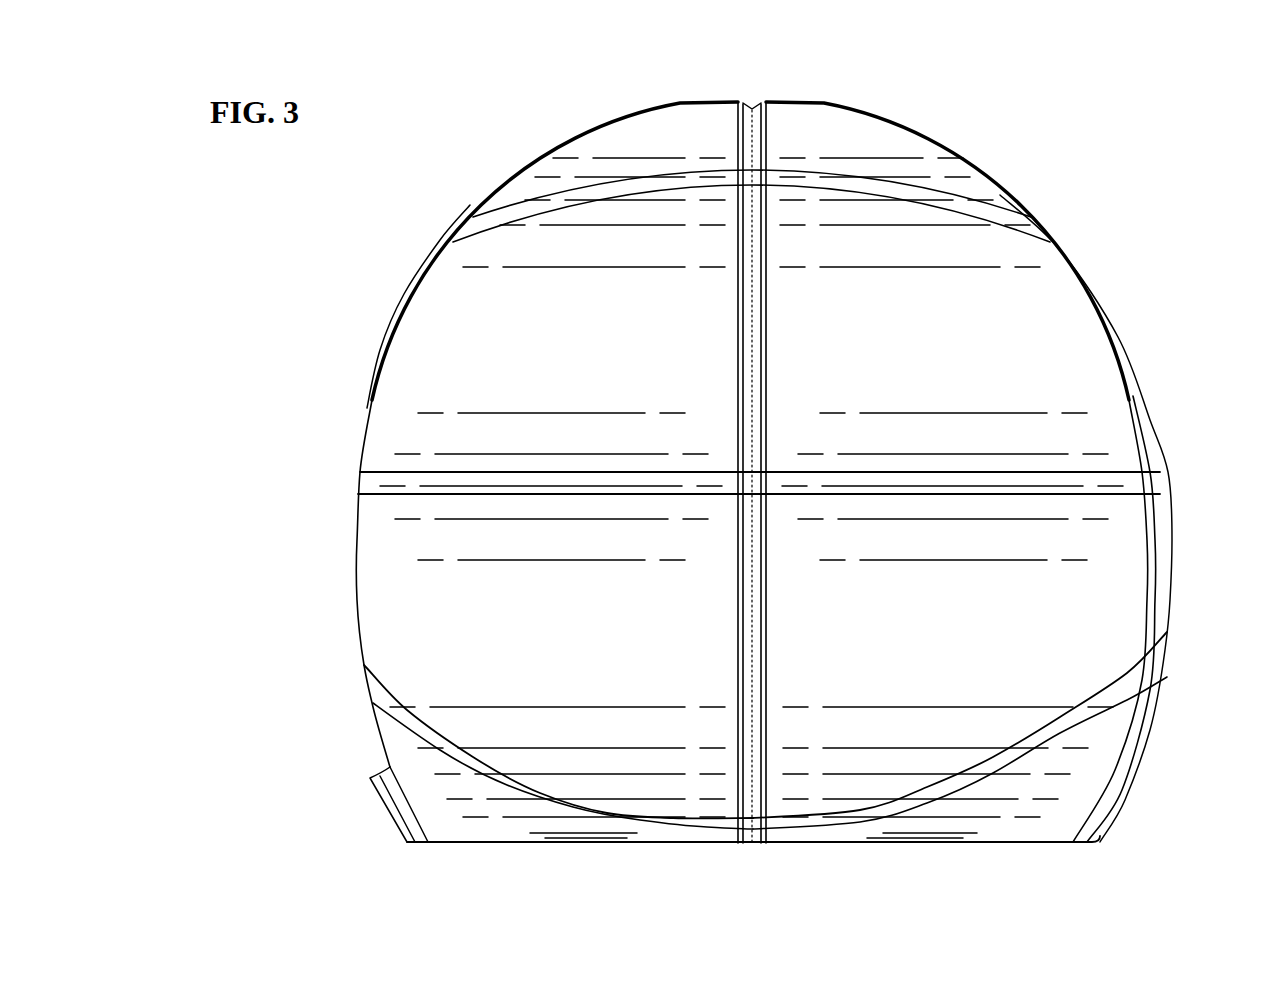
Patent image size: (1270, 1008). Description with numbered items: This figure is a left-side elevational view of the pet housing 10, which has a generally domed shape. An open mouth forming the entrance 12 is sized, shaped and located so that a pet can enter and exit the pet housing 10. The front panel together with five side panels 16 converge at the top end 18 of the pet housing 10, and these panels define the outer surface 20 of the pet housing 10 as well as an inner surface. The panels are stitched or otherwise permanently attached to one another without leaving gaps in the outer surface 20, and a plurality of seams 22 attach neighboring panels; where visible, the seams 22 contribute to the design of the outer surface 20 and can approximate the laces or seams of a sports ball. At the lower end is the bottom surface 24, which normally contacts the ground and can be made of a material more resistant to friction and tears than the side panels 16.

The pet housing 10 is at (1095, 133).
The entrance 12 is at (305, 612).
The side panels 16 is at (632, 157).
The top end 18 is at (805, 75).
The outer surface 20 is at (1010, 390).
The seams 22 is at (753, 760).
The bottom surface 24 is at (732, 870).